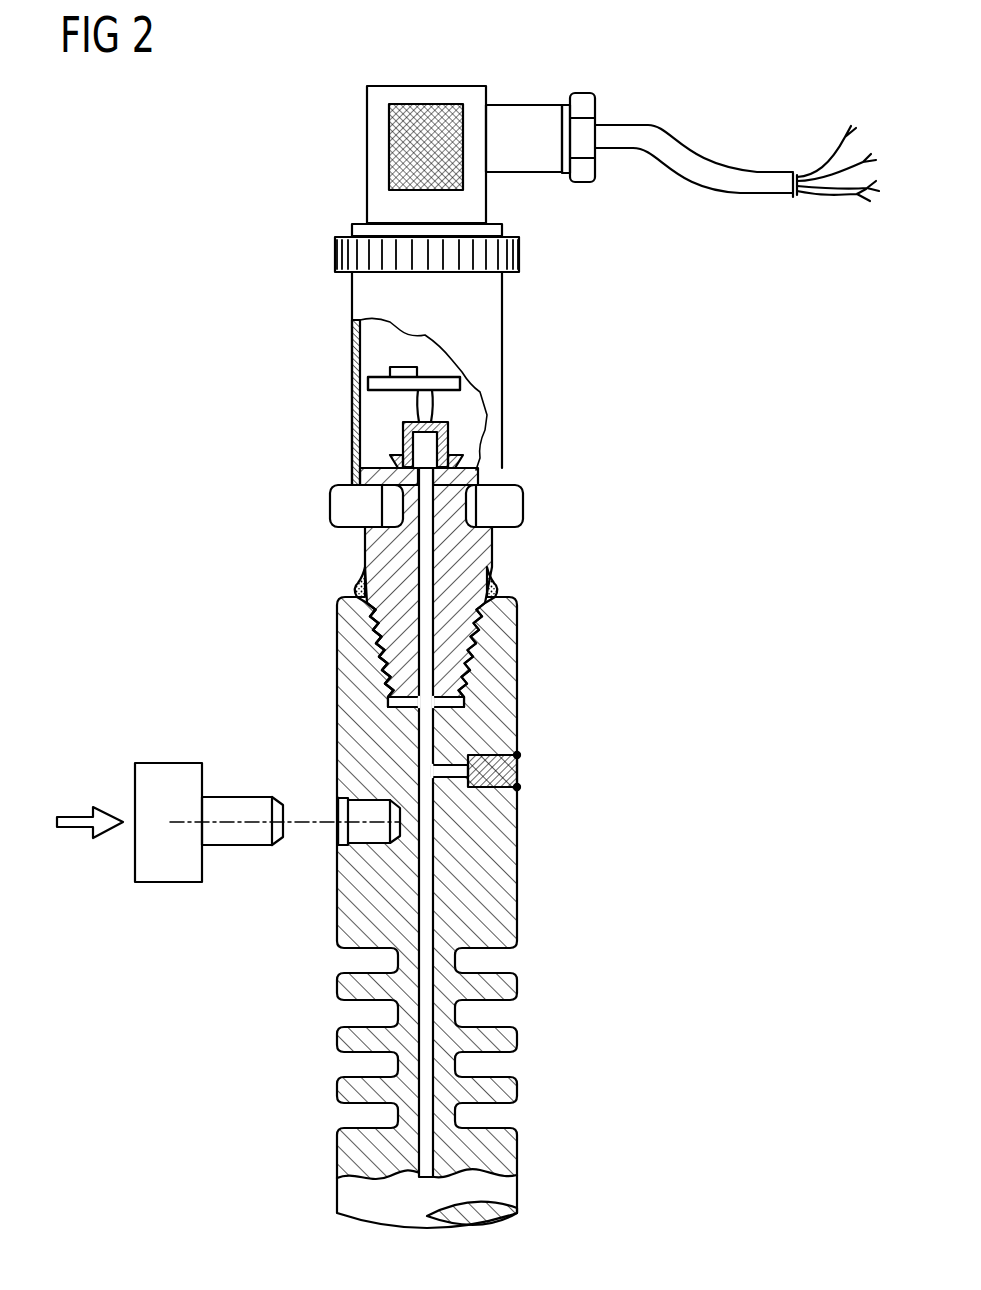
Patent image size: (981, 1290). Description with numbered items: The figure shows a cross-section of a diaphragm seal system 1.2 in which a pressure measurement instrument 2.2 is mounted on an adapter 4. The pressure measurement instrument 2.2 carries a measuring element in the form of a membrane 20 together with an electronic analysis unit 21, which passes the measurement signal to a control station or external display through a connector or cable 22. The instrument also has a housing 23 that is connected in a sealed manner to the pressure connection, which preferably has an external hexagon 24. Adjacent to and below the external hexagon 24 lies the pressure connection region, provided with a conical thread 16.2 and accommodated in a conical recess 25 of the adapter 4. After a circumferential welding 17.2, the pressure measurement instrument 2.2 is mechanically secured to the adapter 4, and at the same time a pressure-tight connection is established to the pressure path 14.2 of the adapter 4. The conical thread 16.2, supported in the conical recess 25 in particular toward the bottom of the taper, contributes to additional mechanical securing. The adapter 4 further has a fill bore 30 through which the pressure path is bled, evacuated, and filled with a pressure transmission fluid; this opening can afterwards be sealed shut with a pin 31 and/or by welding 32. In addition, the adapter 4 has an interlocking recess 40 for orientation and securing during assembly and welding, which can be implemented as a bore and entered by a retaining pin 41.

The diaphragm seal system 1.2 is at (708, 740).
The connector or cable 22 is at (660, 137).
The pressure measurement instrument 2.2 is at (490, 332).
The housing 23 is at (355, 453).
The electronic analysis unit 21 is at (405, 368).
The membrane 20 is at (423, 407).
The conical recess 25 is at (480, 665).
The external hexagon 24 is at (340, 503).
The adapter 4 is at (507, 708).
The circumferential welding 17.2 is at (497, 577).
The conical thread 16.2 is at (368, 618).
The pressure path 14.2 is at (427, 883).
The fill bore 30 is at (463, 779).
The pin 31 is at (520, 755).
The welding 32 is at (520, 787).
The interlocking recess 40 is at (357, 836).
The retaining pin 41 is at (235, 810).